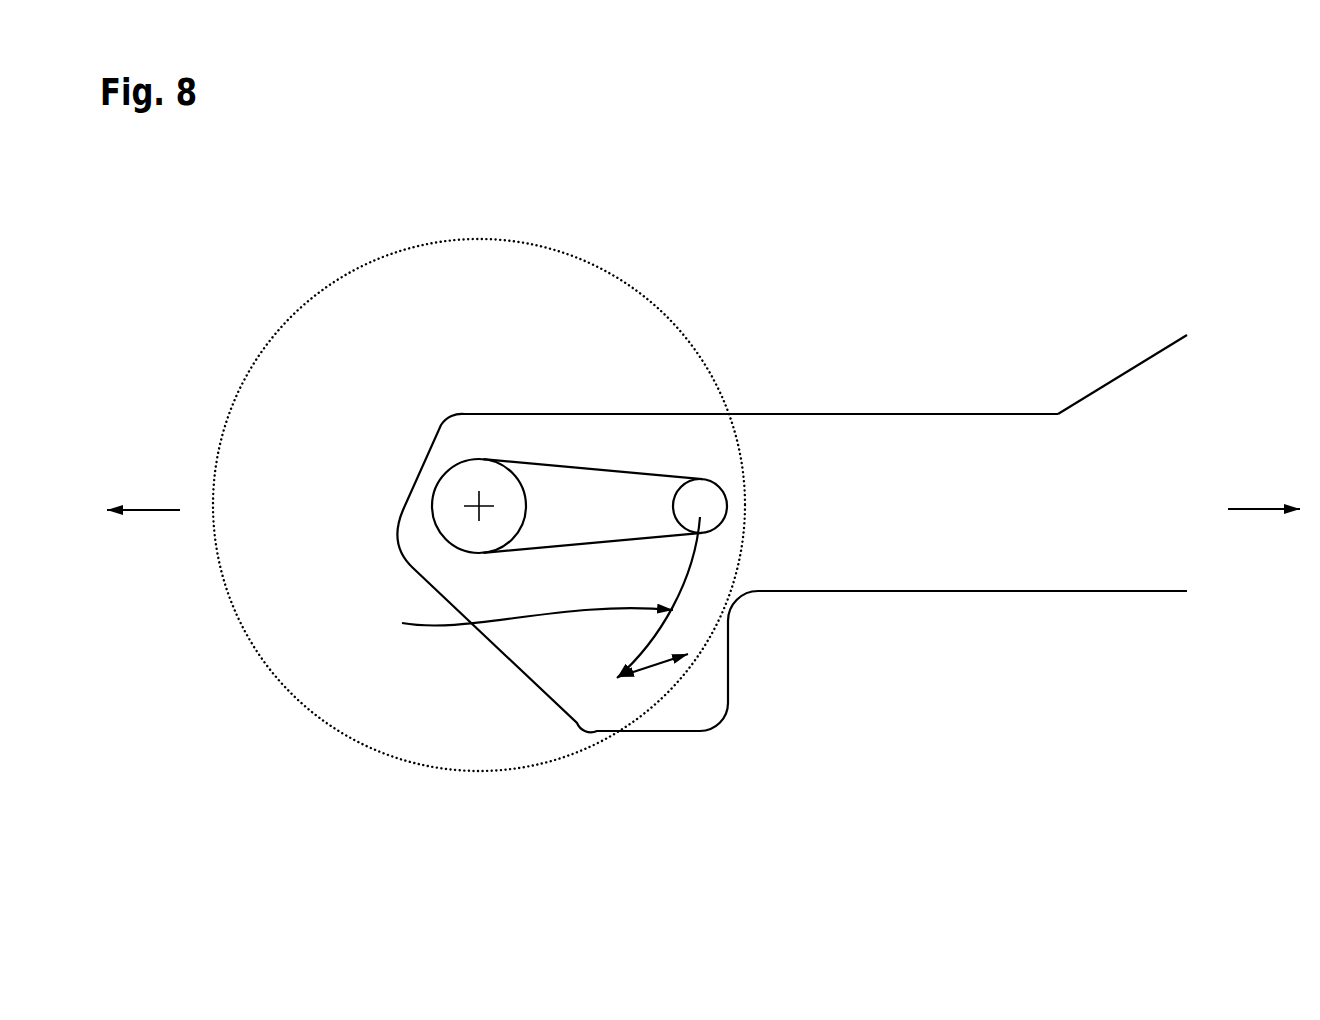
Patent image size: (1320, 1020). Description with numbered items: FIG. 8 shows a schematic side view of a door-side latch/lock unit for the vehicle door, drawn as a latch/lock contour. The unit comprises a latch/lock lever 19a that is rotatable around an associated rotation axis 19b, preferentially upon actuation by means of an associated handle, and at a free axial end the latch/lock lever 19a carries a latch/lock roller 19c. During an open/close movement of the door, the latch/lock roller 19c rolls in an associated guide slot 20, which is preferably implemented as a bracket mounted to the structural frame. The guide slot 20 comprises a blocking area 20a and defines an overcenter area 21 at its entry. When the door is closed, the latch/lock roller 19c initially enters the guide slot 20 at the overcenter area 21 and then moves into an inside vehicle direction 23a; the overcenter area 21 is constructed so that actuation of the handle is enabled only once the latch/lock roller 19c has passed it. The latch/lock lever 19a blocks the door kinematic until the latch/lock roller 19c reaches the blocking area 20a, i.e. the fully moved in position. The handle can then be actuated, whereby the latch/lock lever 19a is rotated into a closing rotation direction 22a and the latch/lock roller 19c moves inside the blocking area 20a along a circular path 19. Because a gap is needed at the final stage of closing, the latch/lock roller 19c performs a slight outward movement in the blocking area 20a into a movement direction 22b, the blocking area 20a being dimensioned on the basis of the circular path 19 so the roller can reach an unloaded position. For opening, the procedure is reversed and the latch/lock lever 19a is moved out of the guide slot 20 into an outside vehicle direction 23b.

The circular path 19 is at (325, 288).
The latch/lock lever 19a is at (562, 512).
The rotation axis 19b is at (477, 505).
The latch/lock roller 19c is at (707, 503).
The guide slot 20 is at (973, 543).
The blocking area 20a is at (695, 708).
The overcenter area 21 is at (1130, 368).
The closing rotation direction 22a is at (511, 624).
The movement direction 22b is at (647, 672).
The inside vehicle direction 23a is at (150, 512).
The outside vehicle direction 23b is at (1258, 510).